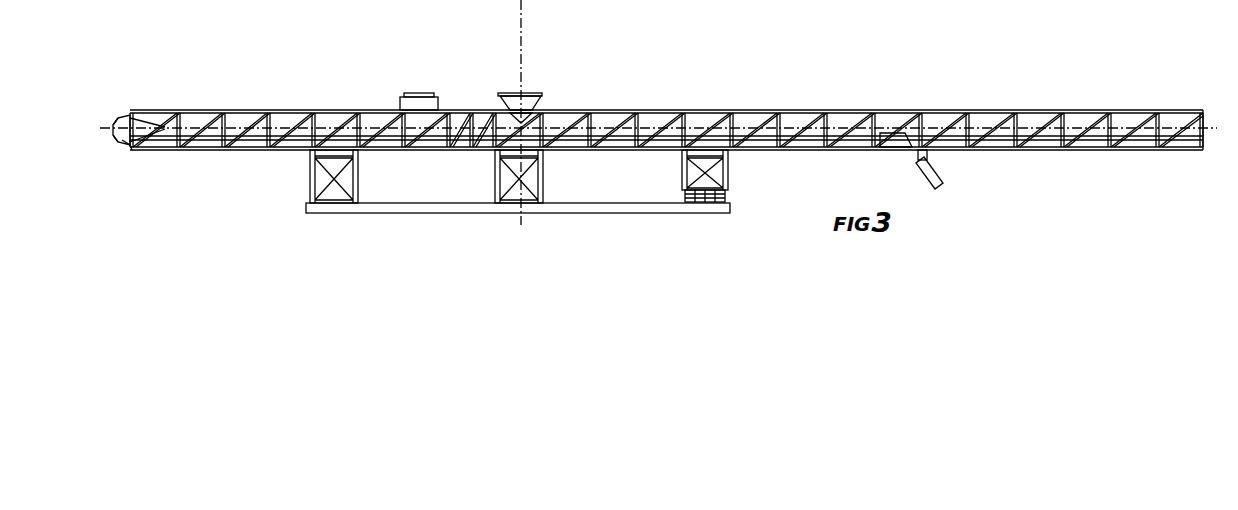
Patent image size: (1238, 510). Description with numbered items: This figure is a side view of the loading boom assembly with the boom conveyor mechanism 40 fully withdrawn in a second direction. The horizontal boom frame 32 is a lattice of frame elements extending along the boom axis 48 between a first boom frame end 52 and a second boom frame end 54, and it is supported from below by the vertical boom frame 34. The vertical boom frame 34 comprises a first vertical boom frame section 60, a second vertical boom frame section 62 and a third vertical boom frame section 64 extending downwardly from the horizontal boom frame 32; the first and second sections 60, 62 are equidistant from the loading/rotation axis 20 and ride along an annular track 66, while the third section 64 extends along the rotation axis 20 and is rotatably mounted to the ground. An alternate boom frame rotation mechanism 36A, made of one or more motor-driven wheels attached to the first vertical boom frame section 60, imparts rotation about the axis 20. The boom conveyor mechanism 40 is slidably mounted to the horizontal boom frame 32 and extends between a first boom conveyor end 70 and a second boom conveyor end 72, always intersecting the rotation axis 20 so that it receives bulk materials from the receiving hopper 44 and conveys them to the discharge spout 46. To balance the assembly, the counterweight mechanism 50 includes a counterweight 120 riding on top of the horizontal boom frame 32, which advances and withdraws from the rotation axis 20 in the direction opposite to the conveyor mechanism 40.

The loading/rotation axis 20 is at (522, 40).
The horizontal boom frame 32 is at (658, 101).
The boom conveyor mechanism 40 is at (743, 111).
The receiving hopper 44 is at (533, 103).
The discharge spout 46 is at (954, 174).
The boom axis 48 is at (111, 122).
The counterweight mechanism 50 is at (411, 79).
The first boom frame end 52 is at (1200, 110).
The second boom frame end 54 is at (146, 150).
The first vertical boom frame section 60 is at (682, 178).
The second vertical boom frame section 62 is at (358, 183).
The third vertical boom frame section 64 is at (495, 183).
The annular track 66 is at (578, 206).
The first boom conveyor end 70 is at (896, 140).
The second boom conveyor end 72 is at (159, 127).
The counterweight 120 is at (425, 98).
The vertical boom frame 34 is at (516, 200).
The boom frame rotation mechanism 36A is at (740, 198).